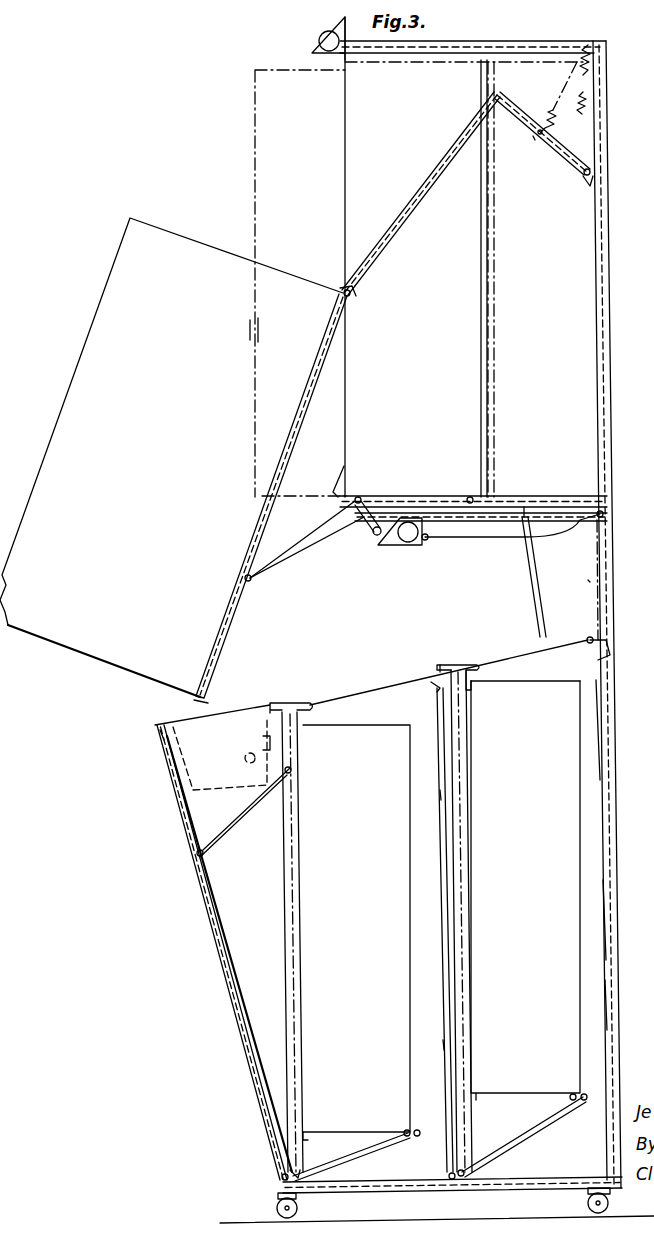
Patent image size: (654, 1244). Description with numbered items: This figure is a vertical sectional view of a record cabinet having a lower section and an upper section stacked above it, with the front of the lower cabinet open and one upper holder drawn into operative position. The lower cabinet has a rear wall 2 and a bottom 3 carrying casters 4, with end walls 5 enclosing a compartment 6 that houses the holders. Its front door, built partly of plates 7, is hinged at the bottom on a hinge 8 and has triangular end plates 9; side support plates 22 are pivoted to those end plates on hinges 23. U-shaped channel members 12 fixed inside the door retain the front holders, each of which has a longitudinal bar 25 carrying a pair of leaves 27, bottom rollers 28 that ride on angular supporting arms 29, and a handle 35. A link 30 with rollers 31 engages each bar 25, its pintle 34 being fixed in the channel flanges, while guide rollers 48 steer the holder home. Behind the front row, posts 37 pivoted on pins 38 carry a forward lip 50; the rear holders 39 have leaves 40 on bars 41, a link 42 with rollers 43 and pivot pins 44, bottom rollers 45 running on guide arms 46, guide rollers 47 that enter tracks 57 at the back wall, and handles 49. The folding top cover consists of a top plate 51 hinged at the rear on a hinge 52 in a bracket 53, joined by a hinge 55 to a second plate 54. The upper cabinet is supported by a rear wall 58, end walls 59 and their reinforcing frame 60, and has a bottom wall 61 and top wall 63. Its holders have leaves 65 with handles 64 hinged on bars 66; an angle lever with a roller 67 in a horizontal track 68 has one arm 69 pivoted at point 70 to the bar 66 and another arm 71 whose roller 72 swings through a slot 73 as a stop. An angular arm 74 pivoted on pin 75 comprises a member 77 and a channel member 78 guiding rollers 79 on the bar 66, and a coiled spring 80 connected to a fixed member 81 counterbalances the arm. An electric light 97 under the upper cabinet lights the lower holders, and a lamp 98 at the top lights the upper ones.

The rear wall 2 is at (617, 919).
The bottom 3 is at (528, 1186).
The casters 4 is at (277, 1208).
The end walls 5 is at (371, 682).
The compartment 6 is at (601, 736).
The plates 7 is at (216, 955).
The hinge 8 is at (282, 1176).
The end plates 9 is at (208, 823).
The channel members 12 is at (228, 946).
The plates 22 is at (236, 724).
The hinges 23 is at (262, 743).
The longitudinal bars 25 is at (287, 993).
The leaves 27 is at (356, 932).
The bottom rollers 28 is at (300, 1175).
The angular supporting arms 29 is at (365, 1148).
The links 30 is at (245, 813).
The rollers 31 is at (293, 773).
The pintles 34 is at (205, 858).
The handle 35 is at (291, 703).
The posts 37 is at (445, 1043).
The pins 38 is at (450, 1174).
The holders 39 is at (521, 680).
The leaves 40 is at (525, 890).
The bars 41 is at (466, 853).
The link 42 is at (444, 773).
The rollers 43 is at (456, 671).
The pivot pins 44 is at (444, 796).
The rollers 45 is at (468, 1168).
The guide arms 46 is at (530, 1138).
The guide rollers 47 is at (581, 1101).
The rollers 48 is at (407, 1130).
The handles 49 is at (445, 668).
The lip 50 is at (431, 687).
The top 51 is at (596, 612).
The hinge 52 is at (588, 640).
The bracket 53 is at (607, 641).
The plate 54 is at (486, 539).
The hinge 55 is at (597, 517).
The tracks 57 is at (606, 1003).
The rear wall 58 is at (610, 456).
The end walls 59 is at (589, 580).
The reinforcing frame 60 is at (528, 594).
The bottom wall 61 is at (462, 523).
The top wall 63 is at (497, 41).
The handles 64 is at (338, 478).
The leaves 65 is at (171, 457).
The bars 66 is at (496, 302).
The roller 67 is at (364, 499).
The track 68 is at (528, 500).
The arm 69 is at (492, 451).
The point 70 is at (246, 578).
The arm 71 is at (470, 497).
The roller 72 is at (375, 541).
The slot 73 is at (350, 504).
The angular arm 74 is at (560, 166).
The pin 75 is at (592, 172).
The member 77 is at (536, 138).
The member 78 is at (390, 251).
The rollers 79 is at (355, 292).
The coiled spring 80 is at (556, 100).
The fixed member 81 is at (588, 45).
The electric light 97 is at (408, 536).
The lamp 98 is at (322, 41).